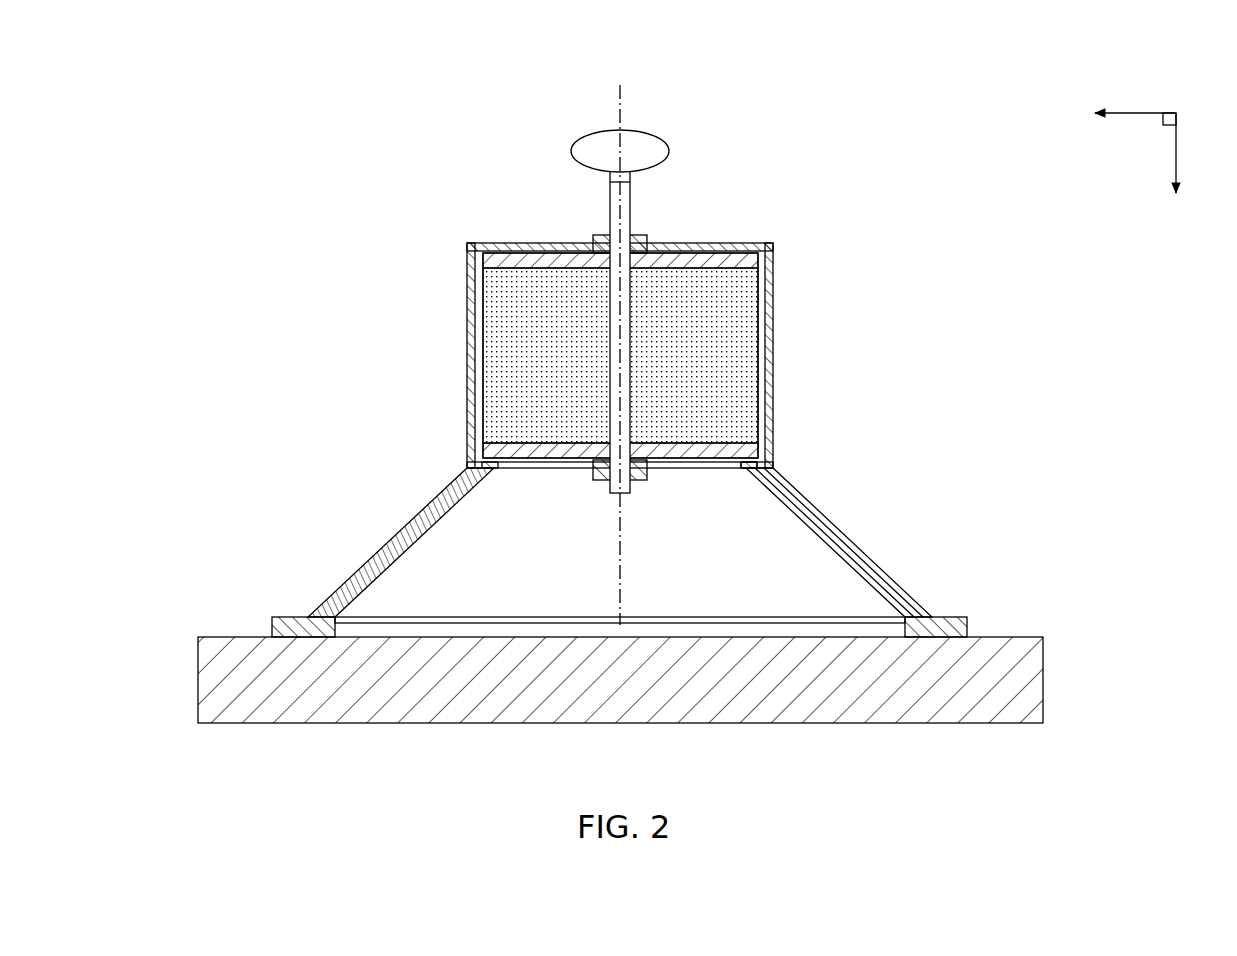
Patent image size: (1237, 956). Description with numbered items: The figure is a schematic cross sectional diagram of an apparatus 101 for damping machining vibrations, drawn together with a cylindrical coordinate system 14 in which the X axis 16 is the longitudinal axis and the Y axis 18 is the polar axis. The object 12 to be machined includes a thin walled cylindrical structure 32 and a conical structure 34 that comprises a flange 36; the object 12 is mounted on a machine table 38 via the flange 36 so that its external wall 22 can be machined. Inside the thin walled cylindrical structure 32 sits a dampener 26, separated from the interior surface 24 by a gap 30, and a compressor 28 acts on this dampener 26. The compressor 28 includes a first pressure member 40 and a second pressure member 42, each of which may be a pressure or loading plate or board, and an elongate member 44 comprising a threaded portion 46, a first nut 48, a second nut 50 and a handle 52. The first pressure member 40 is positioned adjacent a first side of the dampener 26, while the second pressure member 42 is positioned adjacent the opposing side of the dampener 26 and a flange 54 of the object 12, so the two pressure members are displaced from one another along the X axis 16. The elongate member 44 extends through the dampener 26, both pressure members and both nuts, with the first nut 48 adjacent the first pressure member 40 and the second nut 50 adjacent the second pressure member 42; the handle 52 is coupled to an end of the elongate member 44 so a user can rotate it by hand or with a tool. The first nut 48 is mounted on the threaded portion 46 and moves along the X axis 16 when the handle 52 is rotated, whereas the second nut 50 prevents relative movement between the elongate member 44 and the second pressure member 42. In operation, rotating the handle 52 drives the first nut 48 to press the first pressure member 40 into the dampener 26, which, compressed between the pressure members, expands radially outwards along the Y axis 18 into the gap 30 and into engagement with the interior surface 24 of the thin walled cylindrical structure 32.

The apparatus 101 is at (820, 115).
The object 12 is at (1015, 338).
The cylindrical coordinate system 14 is at (1140, 152).
The X axis 16 is at (1178, 155).
The Y axis 18 is at (1140, 112).
The external wall 22 is at (775, 280).
The interior surface 24 is at (760, 342).
The dampener 26 is at (495, 365).
The compressor 28 is at (688, 138).
The gap 30 is at (476, 398).
The thin walled cylindrical structure 32 is at (762, 242).
The conical structure 34 is at (778, 535).
The flange 36 is at (937, 617).
The machine table 38 is at (1000, 652).
The first pressure member 40 is at (517, 265).
The second pressure member 42 is at (490, 452).
The elongate member 44 is at (614, 352).
The threaded portion 46 is at (628, 200).
The first nut 48 is at (592, 240).
The second nut 50 is at (597, 472).
The handle 52 is at (598, 148).
The flange 54 is at (752, 472).